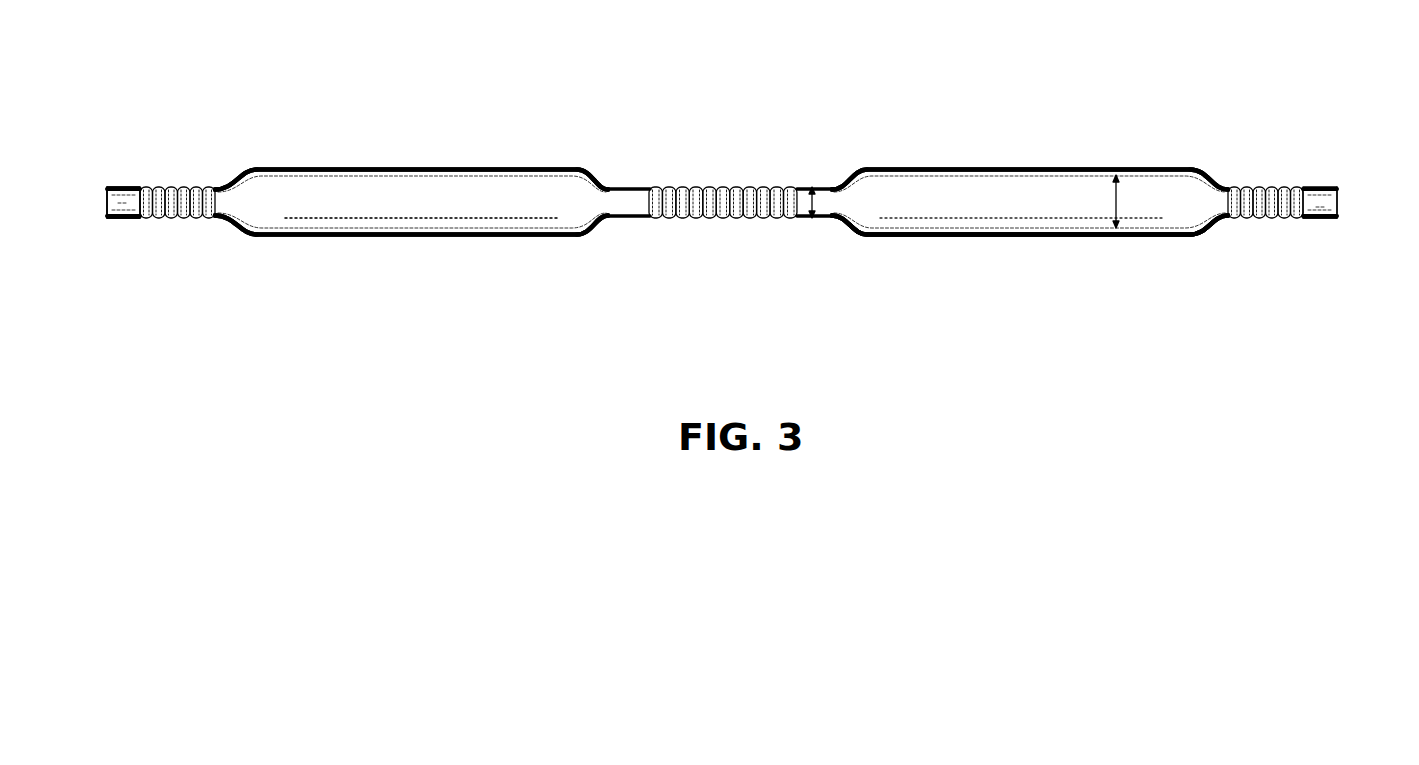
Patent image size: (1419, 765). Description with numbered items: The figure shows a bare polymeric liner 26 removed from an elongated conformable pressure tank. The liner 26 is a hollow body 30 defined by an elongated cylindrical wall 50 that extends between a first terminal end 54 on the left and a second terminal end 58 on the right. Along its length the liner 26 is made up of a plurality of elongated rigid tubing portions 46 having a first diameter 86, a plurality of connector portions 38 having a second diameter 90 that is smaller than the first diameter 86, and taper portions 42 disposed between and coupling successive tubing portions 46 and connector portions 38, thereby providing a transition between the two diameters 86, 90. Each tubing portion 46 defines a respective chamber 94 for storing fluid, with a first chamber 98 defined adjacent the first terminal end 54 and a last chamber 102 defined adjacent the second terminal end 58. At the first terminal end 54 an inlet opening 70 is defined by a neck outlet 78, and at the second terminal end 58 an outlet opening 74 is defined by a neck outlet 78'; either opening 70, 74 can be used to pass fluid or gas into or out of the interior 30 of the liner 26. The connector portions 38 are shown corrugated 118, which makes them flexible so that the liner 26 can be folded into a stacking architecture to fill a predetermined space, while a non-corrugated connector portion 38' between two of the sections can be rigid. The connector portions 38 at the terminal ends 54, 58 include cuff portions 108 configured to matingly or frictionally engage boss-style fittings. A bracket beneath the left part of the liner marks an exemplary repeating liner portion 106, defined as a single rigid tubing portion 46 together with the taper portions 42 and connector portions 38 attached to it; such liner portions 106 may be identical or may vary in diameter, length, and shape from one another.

The polymeric liner 26 is at (282, 52).
The hollow body 30 is at (319, 206).
The connector portions 38 is at (721, 198).
The non-corrugated connector portion 38' is at (629, 177).
The taper portions 42 is at (232, 183).
The elongated rigid tubing portions 46 is at (418, 167).
The elongated cylindrical wall 50 is at (1025, 237).
The first terminal end 54 is at (107, 216).
The second terminal end 58 is at (1338, 212).
The inlet opening 70 is at (107, 200).
The outlet opening 74 is at (1338, 197).
The neck outlet 78 is at (100, 172).
The neck outlet 78' is at (1332, 170).
The first diameter 86 is at (1118, 202).
The second diameter 90 is at (814, 200).
The chamber 94 is at (408, 209).
The first chamber 98 is at (444, 209).
The last chamber 102 is at (1062, 209).
The repeating liner portion 106 is at (720, 300).
The cuff portions 108 is at (116, 172).
The corrugations 118 is at (173, 218).